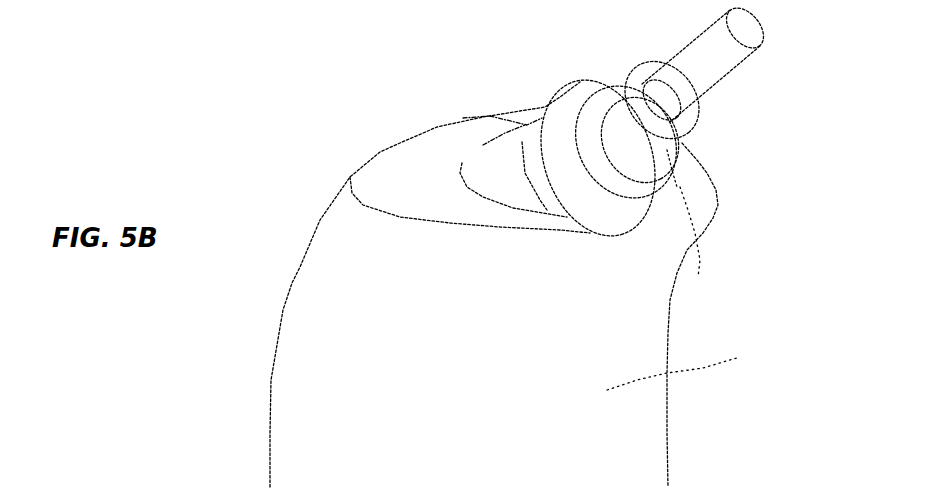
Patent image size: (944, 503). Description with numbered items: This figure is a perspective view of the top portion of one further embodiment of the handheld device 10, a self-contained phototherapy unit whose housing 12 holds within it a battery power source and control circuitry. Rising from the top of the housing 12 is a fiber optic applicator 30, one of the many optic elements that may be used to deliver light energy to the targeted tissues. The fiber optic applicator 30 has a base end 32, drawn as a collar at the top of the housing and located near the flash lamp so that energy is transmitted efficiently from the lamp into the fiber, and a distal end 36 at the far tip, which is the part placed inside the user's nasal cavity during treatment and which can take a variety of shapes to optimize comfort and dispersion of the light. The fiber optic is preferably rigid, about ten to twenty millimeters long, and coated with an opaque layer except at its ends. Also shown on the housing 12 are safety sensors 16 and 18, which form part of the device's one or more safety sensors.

The handheld device 10 is at (467, 83).
The housing 12 is at (534, 284).
The safety sensor 16 is at (476, 166).
The safety sensor 18 is at (696, 239).
The fiber optic applicator 30 is at (700, 45).
The base end 32 is at (583, 222).
The distal end 36 is at (761, 41).